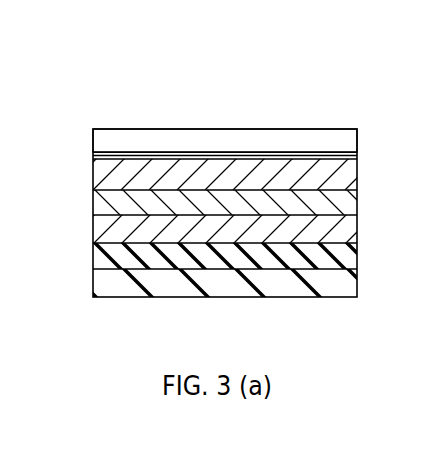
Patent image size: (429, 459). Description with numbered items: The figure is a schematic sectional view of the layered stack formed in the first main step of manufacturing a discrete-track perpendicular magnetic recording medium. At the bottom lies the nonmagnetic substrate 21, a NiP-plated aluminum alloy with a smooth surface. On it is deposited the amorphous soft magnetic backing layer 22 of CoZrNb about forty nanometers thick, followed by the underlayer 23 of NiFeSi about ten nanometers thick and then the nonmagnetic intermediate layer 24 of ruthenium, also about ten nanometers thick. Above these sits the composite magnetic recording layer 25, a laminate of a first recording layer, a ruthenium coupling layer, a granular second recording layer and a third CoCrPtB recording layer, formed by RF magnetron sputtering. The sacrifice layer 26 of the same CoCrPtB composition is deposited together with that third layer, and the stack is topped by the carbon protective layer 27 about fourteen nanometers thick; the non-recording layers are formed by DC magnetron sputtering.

The nonmagnetic substrate 21 is at (318, 286).
The amorphous soft magnetic backing layer 22 is at (318, 263).
The underlayer 23 is at (340, 233).
The nonmagnetic intermediate layer 24 is at (345, 205).
The composite magnetic recording layer 25 is at (348, 182).
The sacrifice layer 26 is at (353, 154).
The carbon protective layer 27 is at (137, 140).